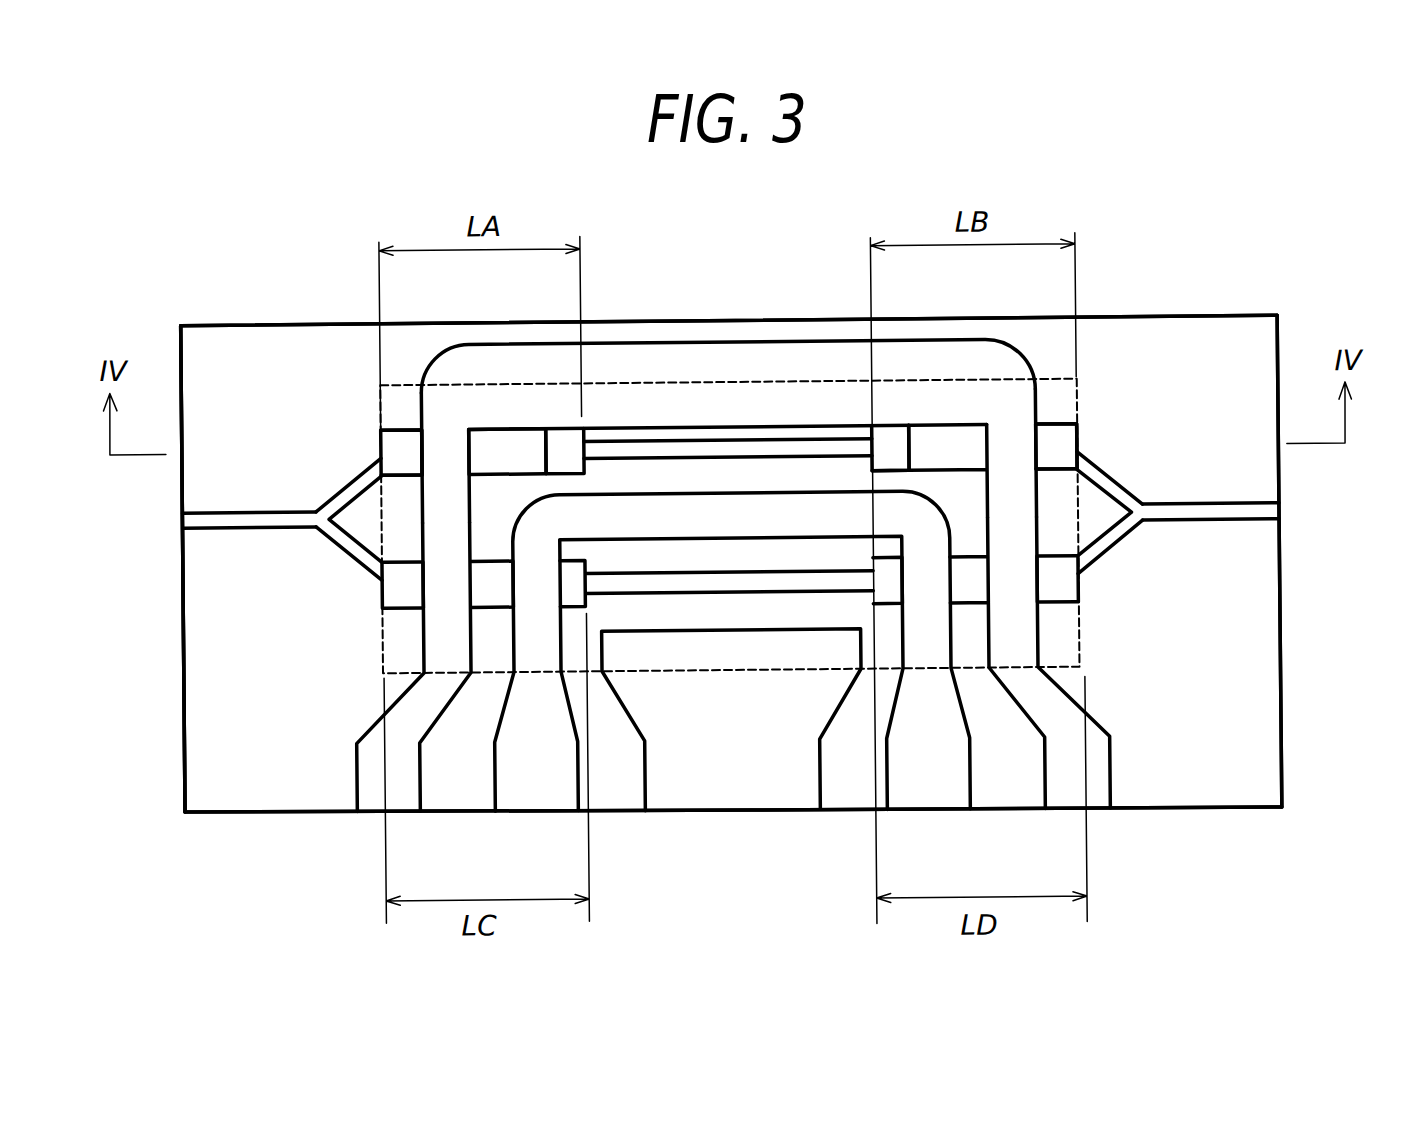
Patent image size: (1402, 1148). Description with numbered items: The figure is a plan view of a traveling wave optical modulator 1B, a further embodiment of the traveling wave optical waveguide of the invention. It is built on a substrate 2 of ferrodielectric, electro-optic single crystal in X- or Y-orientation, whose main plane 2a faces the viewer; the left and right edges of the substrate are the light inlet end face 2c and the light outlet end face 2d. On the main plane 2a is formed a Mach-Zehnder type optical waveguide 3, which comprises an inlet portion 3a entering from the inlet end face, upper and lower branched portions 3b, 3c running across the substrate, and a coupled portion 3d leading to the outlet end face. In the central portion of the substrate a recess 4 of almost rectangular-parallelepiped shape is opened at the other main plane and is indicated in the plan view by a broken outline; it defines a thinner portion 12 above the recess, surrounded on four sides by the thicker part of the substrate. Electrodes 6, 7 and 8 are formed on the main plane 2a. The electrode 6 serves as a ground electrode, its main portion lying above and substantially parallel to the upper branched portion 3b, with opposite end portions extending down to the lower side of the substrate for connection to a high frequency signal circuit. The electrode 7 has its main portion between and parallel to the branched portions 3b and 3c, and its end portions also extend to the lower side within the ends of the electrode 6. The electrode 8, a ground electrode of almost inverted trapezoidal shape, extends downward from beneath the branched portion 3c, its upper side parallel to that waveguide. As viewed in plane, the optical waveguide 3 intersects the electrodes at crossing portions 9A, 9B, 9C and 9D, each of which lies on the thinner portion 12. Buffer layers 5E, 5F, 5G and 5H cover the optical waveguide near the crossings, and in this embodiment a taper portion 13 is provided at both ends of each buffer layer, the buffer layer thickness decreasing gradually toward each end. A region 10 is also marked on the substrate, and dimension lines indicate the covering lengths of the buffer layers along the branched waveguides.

The traveling wave optical modulator 1B is at (1204, 292).
The substrate 2 is at (1100, 347).
The main plane 2a is at (213, 348).
The light inlet end face 2c is at (182, 662).
The light outlet end face 2d is at (1281, 650).
The optical waveguide 3 is at (319, 478).
The inlet portion 3a is at (243, 515).
The branched portion 3b is at (723, 450).
The branched portion 3c is at (751, 592).
The coupled portion 3d is at (1210, 516).
The recess 4 is at (685, 382).
The buffer layer 5E is at (366, 410).
The buffer layer 5F is at (1098, 370).
The buffer layer 5G is at (356, 608).
The buffer layer 5H is at (1098, 596).
The electrode 6 is at (805, 359).
The electrode 7 is at (540, 753).
The electrode 8 is at (742, 762).
The crossing portion 9A is at (446, 449).
The crossing portion 9B is at (1016, 446).
The crossing portion 9C is at (447, 585).
The crossing portion 9D is at (1021, 582).
The substrate region 10 is at (202, 406).
The thinner portion 12 is at (615, 402).
The taper portion 13 is at (396, 443).